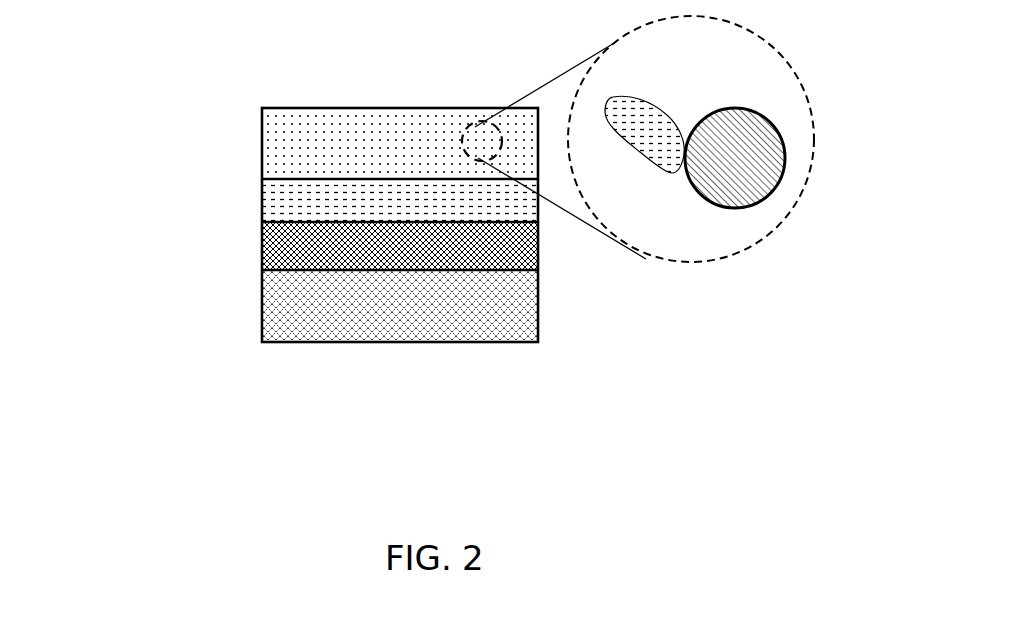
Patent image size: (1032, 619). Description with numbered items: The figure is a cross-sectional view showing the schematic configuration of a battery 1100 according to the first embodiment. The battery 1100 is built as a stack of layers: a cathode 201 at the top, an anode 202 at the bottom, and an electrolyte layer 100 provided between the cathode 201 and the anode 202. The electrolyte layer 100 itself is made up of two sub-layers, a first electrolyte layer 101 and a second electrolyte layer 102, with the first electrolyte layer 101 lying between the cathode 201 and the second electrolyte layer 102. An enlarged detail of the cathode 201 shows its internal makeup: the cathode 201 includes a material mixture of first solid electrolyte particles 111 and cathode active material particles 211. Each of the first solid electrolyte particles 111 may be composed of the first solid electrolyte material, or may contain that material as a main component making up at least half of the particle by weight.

The battery 1100 is at (441, 58).
The cathode 201 is at (297, 130).
The electrolyte layer 100 is at (133, 198).
The first electrolyte layer 101 is at (297, 198).
The second electrolyte layer 102 is at (297, 245).
The anode 202 is at (298, 303).
The cathode active material particles 211 is at (661, 150).
The first solid electrolyte particles 111 is at (753, 158).